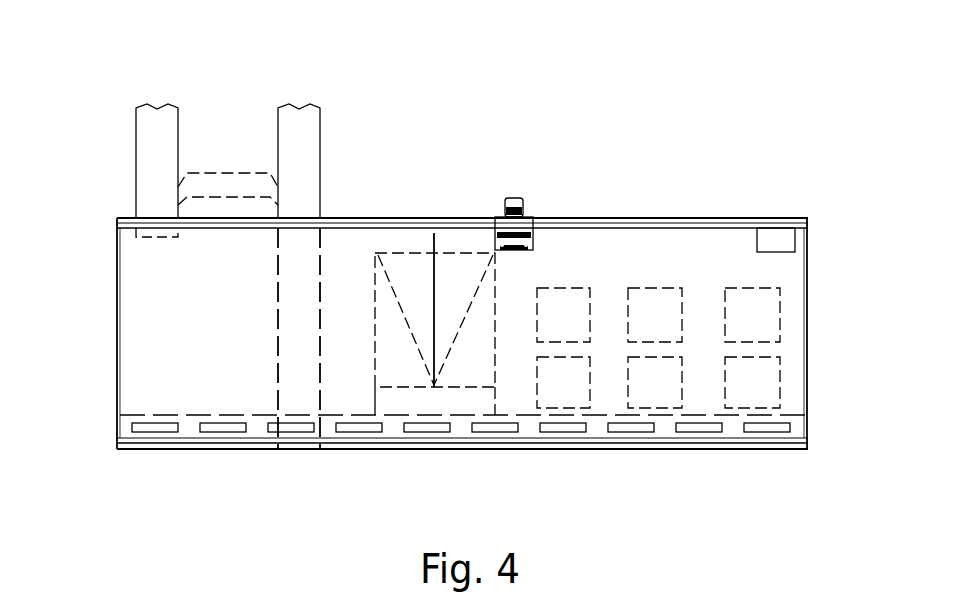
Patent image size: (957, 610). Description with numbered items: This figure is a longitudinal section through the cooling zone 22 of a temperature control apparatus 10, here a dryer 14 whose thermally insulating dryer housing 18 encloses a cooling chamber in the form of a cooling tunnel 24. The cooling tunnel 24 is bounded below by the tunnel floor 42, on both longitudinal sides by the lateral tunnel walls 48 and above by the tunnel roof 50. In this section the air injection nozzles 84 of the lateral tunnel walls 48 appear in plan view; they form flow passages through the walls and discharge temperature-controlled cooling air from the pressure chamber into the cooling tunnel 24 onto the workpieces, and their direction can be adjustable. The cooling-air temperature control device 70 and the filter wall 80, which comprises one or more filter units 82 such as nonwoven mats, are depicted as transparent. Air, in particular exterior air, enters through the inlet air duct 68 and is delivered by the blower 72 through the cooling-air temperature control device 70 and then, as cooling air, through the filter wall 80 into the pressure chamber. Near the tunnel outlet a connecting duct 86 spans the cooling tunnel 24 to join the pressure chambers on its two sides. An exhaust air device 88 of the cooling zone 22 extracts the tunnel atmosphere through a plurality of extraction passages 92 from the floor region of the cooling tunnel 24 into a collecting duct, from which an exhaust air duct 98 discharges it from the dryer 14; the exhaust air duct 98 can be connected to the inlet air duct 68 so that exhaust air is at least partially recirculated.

The temperature control apparatus 10 is at (752, 88).
The dryer 14 is at (806, 200).
The dryer housing 18 is at (672, 208).
The cooling zone 22 is at (513, 153).
The cooling tunnel 24 is at (785, 275).
The tunnel floor 42 is at (124, 417).
The lateral tunnel walls 48 is at (128, 286).
The tunnel roof 50 is at (125, 229).
The inlet air duct 68 is at (172, 126).
The cooling-air temperature control device 70 is at (398, 242).
The blower 72 is at (500, 213).
The filter wall 80 is at (593, 277).
The filter units 82 is at (678, 288).
The air injection nozzles 84 is at (163, 336).
The connecting duct 86 is at (778, 242).
The exhaust air device 88 is at (346, 141).
The extraction passages 92 is at (152, 430).
The exhaust air duct 98 is at (312, 128).